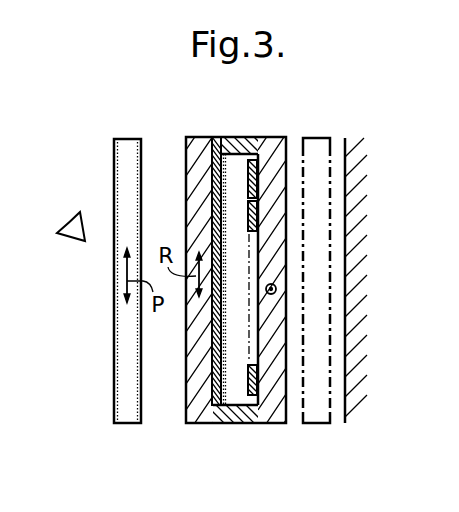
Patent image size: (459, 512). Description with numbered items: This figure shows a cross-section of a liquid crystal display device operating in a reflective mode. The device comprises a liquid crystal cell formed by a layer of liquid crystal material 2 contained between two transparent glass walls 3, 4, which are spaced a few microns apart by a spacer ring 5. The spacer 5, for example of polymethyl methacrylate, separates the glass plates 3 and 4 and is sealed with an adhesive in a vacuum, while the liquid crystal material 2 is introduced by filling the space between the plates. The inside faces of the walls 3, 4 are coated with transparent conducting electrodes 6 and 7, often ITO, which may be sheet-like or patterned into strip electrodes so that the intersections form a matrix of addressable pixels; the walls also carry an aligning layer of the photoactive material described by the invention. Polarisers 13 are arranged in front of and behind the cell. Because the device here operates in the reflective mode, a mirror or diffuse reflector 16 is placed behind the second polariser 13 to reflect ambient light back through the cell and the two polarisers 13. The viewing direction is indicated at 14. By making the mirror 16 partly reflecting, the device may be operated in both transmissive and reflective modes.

The liquid crystal material 2 is at (238, 423).
The glass wall 3 is at (204, 141).
The glass wall 4 is at (270, 424).
The spacer ring 5 is at (250, 148).
The electrode 6 is at (266, 149).
The electrode 7 is at (215, 140).
The polariser 13 is at (127, 152).
The viewer / viewing direction 14 is at (77, 212).
The mirror 16 is at (352, 425).